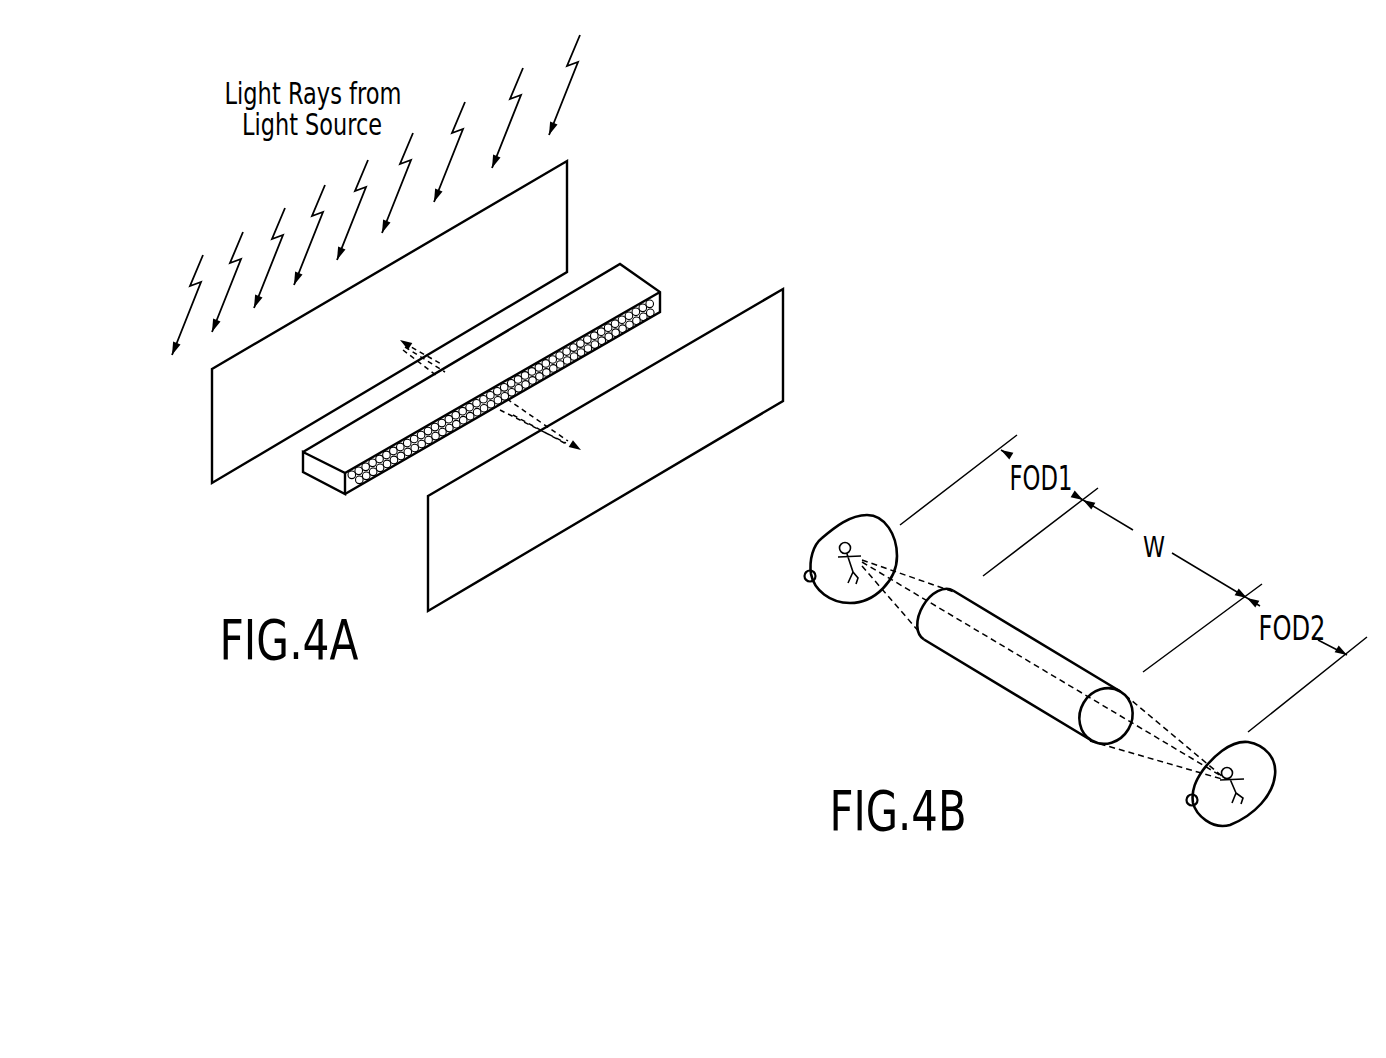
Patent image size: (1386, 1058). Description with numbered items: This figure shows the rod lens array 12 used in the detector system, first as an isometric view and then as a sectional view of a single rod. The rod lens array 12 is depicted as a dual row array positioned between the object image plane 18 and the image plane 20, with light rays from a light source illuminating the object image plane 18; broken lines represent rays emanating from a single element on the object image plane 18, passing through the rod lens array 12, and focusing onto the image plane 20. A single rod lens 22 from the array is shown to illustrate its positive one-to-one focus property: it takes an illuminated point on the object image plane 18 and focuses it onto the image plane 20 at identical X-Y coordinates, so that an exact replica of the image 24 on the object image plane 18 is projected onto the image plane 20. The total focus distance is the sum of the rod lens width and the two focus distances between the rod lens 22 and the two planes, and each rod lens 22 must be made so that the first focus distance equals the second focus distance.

In FIG. 4A, the rod lens array 12 is at (628, 277).
In FIG. 4A, the object image plane 18 is at (557, 227).
In FIG. 4B, the object image plane 18 is at (886, 527).
In FIG. 4A, the image plane 20 is at (779, 356).
In FIG. 4B, the image plane 20 is at (1273, 797).
In FIG. 4B, the single rod lens 22 is at (1038, 638).
In FIG. 4B, the image 24 is at (849, 543).